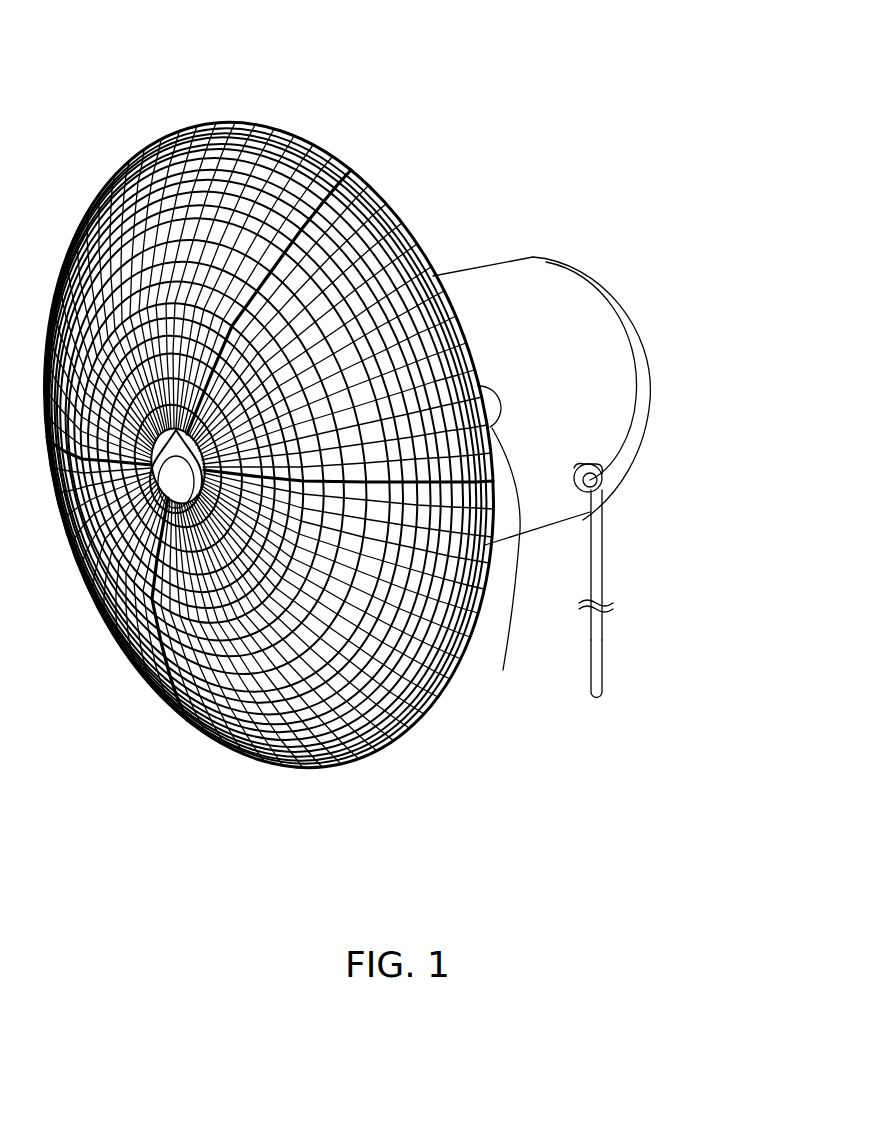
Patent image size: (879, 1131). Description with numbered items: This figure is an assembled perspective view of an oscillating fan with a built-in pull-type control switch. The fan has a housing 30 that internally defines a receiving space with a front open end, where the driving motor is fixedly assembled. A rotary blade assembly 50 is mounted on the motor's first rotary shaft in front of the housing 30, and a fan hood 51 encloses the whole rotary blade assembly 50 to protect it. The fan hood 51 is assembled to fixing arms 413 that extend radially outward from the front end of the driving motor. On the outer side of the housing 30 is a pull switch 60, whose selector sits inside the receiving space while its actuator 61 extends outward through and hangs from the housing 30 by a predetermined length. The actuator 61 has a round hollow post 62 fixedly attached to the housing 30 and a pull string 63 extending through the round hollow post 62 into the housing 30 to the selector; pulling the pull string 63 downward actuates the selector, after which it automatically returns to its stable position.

The rotary blade assembly 50 is at (270, 133).
The fan hood 51 is at (350, 767).
The housing 30 is at (517, 248).
The fixing arms 413 is at (503, 670).
The pull switch 60 is at (712, 460).
The actuator 61 is at (614, 541).
The round hollow post 62 is at (605, 471).
The pull string 63 is at (601, 640).